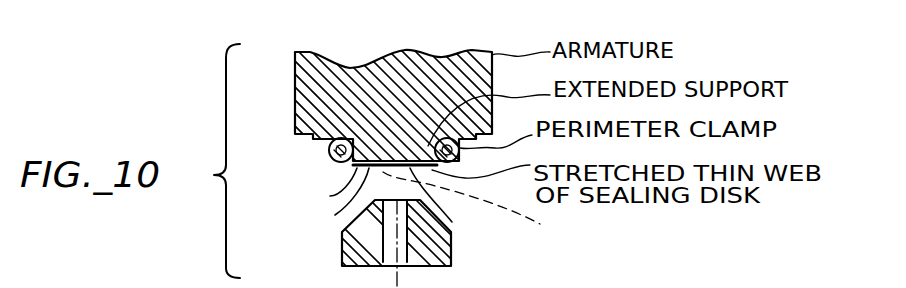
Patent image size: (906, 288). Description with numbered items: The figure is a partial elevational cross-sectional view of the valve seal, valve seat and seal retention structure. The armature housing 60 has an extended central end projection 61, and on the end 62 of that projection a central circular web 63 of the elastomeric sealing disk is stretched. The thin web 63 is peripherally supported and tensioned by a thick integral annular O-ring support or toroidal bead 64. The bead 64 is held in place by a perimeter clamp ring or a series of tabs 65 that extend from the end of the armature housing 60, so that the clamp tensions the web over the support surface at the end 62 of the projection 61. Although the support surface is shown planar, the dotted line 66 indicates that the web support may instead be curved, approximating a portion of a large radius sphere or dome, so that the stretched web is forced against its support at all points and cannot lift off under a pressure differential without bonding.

The armature housing 60 is at (482, 50).
The extended central end projection 61 is at (330, 196).
The end of the extended central end projection 62 is at (335, 215).
The central circular web 63 is at (415, 168).
The toroidal bead 64 is at (329, 148).
The perimeter clamp ring or tabs 65 is at (342, 162).
The dotted line indicating curved web support 66 is at (474, 205).